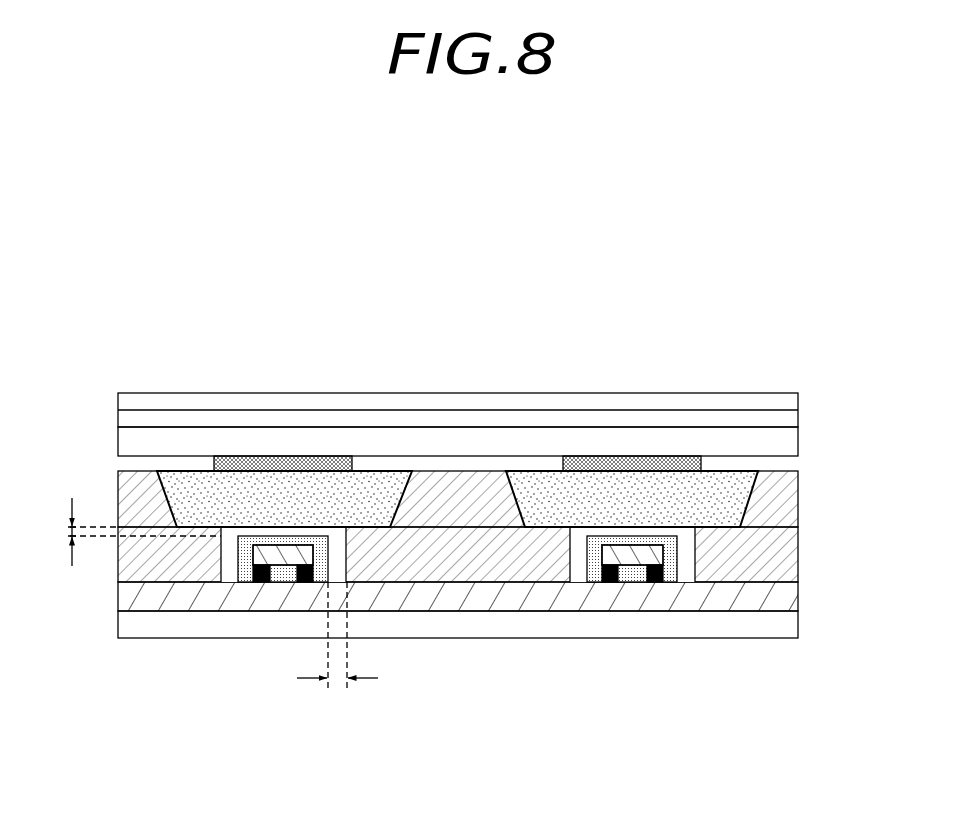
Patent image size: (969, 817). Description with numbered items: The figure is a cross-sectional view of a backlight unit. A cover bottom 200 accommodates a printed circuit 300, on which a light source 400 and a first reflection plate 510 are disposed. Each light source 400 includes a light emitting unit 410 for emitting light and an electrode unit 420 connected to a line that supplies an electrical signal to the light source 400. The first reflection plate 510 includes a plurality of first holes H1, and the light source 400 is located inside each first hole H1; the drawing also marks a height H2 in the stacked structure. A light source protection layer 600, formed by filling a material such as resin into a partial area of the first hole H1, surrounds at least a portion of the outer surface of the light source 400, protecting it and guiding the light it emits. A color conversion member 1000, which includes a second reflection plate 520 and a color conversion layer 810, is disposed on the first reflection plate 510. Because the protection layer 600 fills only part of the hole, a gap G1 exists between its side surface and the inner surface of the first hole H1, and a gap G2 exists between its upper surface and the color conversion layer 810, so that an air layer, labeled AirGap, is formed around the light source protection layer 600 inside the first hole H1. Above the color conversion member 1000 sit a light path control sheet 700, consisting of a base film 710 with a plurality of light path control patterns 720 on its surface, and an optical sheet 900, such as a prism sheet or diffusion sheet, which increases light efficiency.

The cover bottom 200 is at (786, 623).
The printed circuit 300 is at (786, 597).
The light source 400 is at (632, 684).
The light emitting unit 410 is at (602, 554).
The electrode unit 420 is at (655, 576).
The first reflection plate 510 is at (786, 557).
The second reflection plate 520 is at (767, 480).
The light source protection layer 600 is at (247, 578).
The light path control sheet 700 is at (616, 336).
The base film 710 is at (620, 440).
The light path control patterns 720 is at (593, 455).
The color conversion layer 810 is at (714, 475).
The optical sheet 900 is at (803, 393).
The color conversion member 1000 is at (778, 336).
The first hole H1 is at (229, 558).
The height H2 is at (186, 504).
The gap G1 is at (337, 648).
The gap G2 is at (129, 528).
The air layer AirGap is at (288, 531).